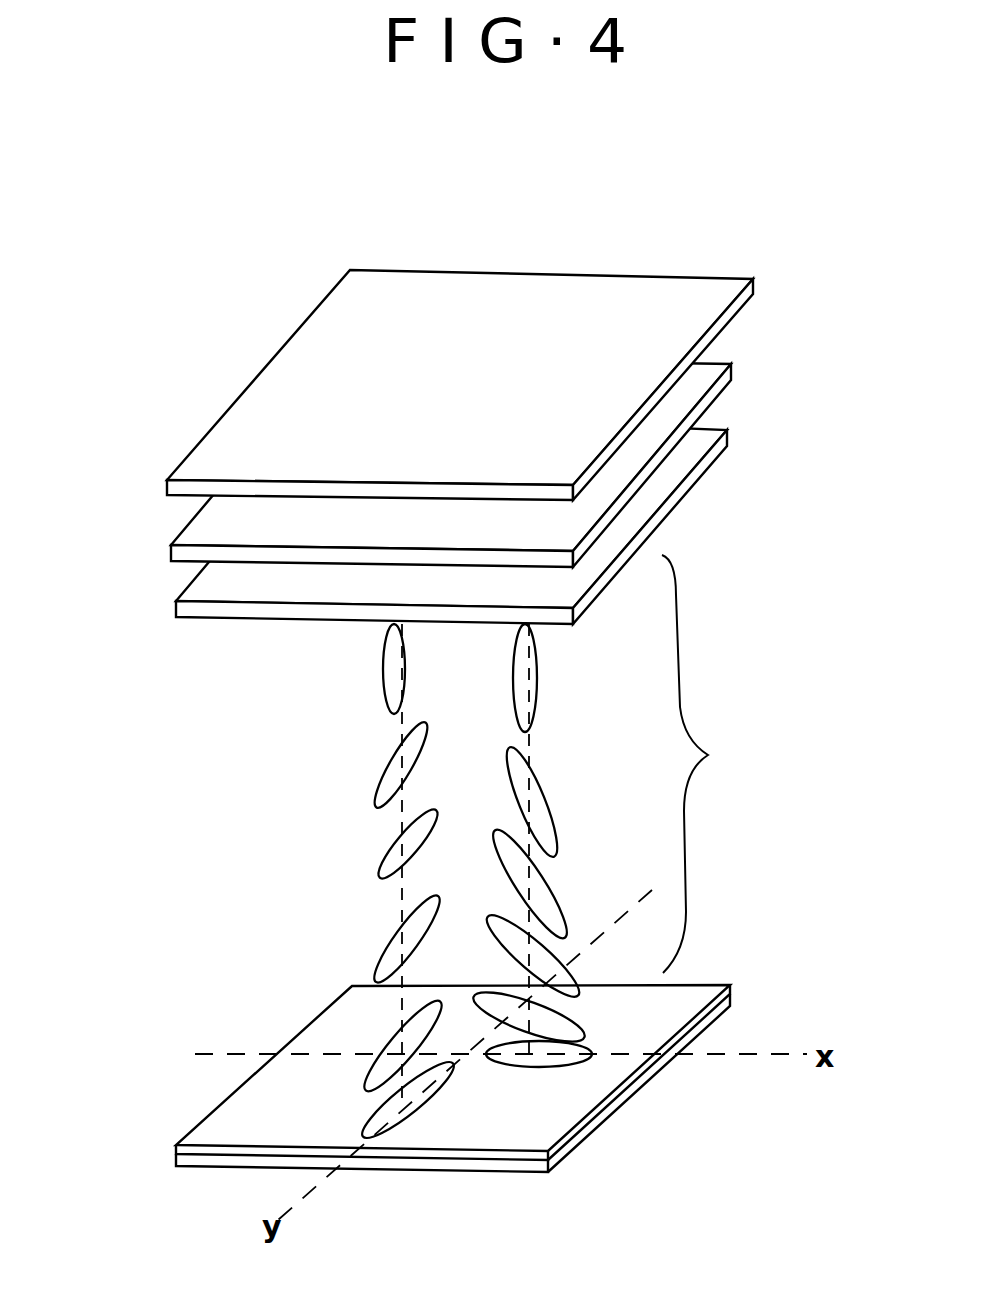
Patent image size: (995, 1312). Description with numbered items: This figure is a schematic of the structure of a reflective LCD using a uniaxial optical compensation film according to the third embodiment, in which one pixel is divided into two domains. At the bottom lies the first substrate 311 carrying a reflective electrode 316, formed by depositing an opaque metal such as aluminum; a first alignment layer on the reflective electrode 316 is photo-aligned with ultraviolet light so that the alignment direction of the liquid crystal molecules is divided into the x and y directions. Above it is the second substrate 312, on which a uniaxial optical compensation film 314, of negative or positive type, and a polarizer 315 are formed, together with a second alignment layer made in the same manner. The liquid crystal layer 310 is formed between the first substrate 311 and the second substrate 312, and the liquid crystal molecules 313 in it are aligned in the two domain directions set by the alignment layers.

The liquid crystal layer 310 is at (724, 764).
The first substrate 311 is at (221, 1159).
The second substrate 312 is at (205, 587).
The liquid crystal molecules 313 is at (383, 872).
The uniaxial optical compensation film 314 is at (232, 523).
The polarizer 315 is at (262, 412).
The reflective electrode 316 is at (224, 1106).